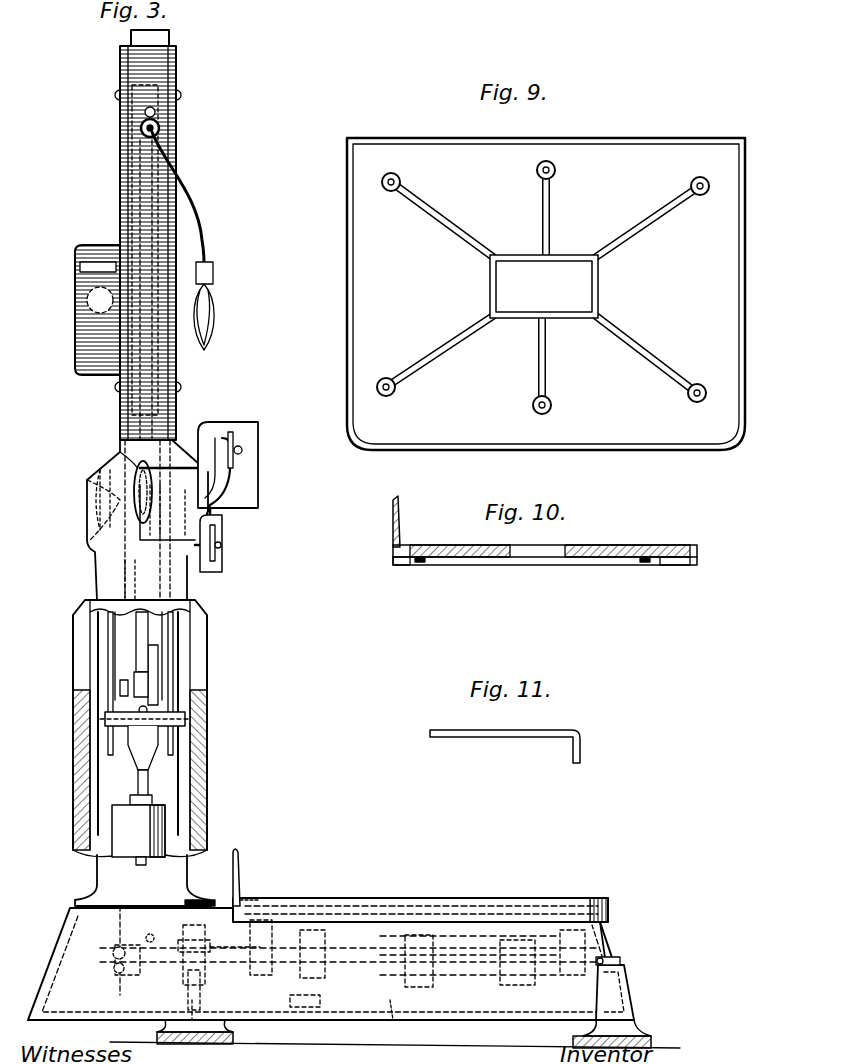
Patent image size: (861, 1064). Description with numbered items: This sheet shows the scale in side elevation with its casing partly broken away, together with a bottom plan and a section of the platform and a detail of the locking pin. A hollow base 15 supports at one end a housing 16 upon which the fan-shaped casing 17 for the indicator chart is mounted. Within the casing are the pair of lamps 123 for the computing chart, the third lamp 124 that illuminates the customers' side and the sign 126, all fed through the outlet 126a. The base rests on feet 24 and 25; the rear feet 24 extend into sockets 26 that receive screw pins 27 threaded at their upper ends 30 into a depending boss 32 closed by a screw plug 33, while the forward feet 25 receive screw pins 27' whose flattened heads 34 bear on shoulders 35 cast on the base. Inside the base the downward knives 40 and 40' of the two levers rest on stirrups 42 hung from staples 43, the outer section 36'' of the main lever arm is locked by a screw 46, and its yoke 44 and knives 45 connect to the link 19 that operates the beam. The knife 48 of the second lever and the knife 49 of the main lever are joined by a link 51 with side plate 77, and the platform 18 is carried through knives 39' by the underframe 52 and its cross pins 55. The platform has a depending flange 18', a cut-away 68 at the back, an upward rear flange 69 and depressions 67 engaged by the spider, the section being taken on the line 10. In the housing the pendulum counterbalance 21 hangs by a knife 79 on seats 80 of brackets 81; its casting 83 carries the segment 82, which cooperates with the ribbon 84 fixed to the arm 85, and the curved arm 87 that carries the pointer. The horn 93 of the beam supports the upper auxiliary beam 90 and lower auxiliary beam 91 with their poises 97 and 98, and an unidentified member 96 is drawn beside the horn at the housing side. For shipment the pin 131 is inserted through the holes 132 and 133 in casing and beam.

In FIG. 9, the spider 10 is at (546, 137).
In FIG. 3, the hollow base 15 is at (608, 938).
In FIG. 3, the housing 16 is at (196, 580).
In FIG. 3, the fan-shaped casing 17 is at (172, 368).
In FIG. 3, the platform 18 is at (420, 895).
In FIG. 9, the platform 18 is at (522, 294).
In FIG. 10, the platform 18 is at (545, 541).
In FIG. 3, the depending flange 18' is at (621, 900).
In FIG. 9, the depending flange 18' is at (662, 473).
In FIG. 10, the depending flange 18' is at (698, 555).
In FIG. 3, the link 19 is at (118, 840).
In FIG. 3, the pendulum counterbalance 21 is at (138, 830).
In FIG. 3, the feet 24 is at (234, 1036).
In FIG. 3, the feet 25 is at (573, 1042).
In FIG. 3, the sockets 26 is at (188, 1002).
In FIG. 3, the screw pins 27 is at (181, 963).
In FIG. 3, the screw pins 27' is at (575, 973).
In FIG. 3, the threaded portion 30 is at (200, 980).
In FIG. 3, the depending boss 32 is at (205, 930).
In FIG. 3, the screw plug 33 is at (200, 900).
In FIG. 3, the flattened heads 34 is at (612, 958).
In FIG. 3, the shoulders 35 is at (625, 975).
In FIG. 3, the outer section 36'' is at (129, 969).
In FIG. 3, the knives 39' is at (303, 950).
In FIG. 3, the knives 40 is at (593, 955).
In FIG. 3, the knives 40' is at (235, 948).
In FIG. 3, the stirrups 42 is at (255, 886).
In FIG. 3, the staples 43 is at (606, 926).
In FIG. 3, the yoke 44 is at (112, 940).
In FIG. 3, the knives 45 is at (112, 962).
In FIG. 3, the screw 46 is at (154, 928).
In FIG. 3, the knife 48 is at (470, 962).
In FIG. 3, the knife 49 is at (470, 957).
In FIG. 3, the link 51 is at (433, 945).
In FIG. 3, the underframe 52 is at (391, 1018).
In FIG. 3, the cross pins 55 is at (311, 1006).
In FIG. 9, the depressions 67 is at (400, 178).
In FIG. 10, the depressions 67 is at (422, 562).
In FIG. 9, the cut-away 68 is at (744, 141).
In FIG. 10, the cut-away 68 is at (393, 562).
In FIG. 3, the upwardly extending flange 69 is at (242, 856).
In FIG. 10, the upwardly extending flange 69 is at (401, 506).
In FIG. 3, the side plate 77 is at (466, 935).
In FIG. 3, the knife 79 is at (146, 708).
In FIG. 3, the seats 80 is at (110, 740).
In FIG. 3, the brackets 81 is at (108, 673).
In FIG. 3, the segment 82 is at (134, 678).
In FIG. 3, the casting 83 is at (128, 730).
In FIG. 3, the ribbon 84 is at (128, 698).
In FIG. 3, the arm 85 is at (115, 640).
In FIG. 3, the curved arm 87 is at (158, 660).
In FIG. 3, the upper auxiliary beam 90 is at (240, 452).
In FIG. 3, the lower auxiliary beam 91 is at (218, 552).
In FIG. 3, the horn 93 is at (172, 470).
In FIG. 3, the lever 96 is at (212, 495).
In FIG. 3, the poise 97 is at (248, 422).
In FIG. 3, the poise 98 is at (222, 526).
In FIG. 3, the lamps 123 is at (214, 300).
In FIG. 3, the third lamp 124 is at (87, 298).
In FIG. 3, the sign 126 is at (75, 342).
In FIG. 3, the outlet 126a is at (169, 40).
In FIG. 11, the pin 131 is at (562, 729).
In FIG. 3, the holes 132 is at (96, 560).
In FIG. 3, the holes 133 is at (146, 524).